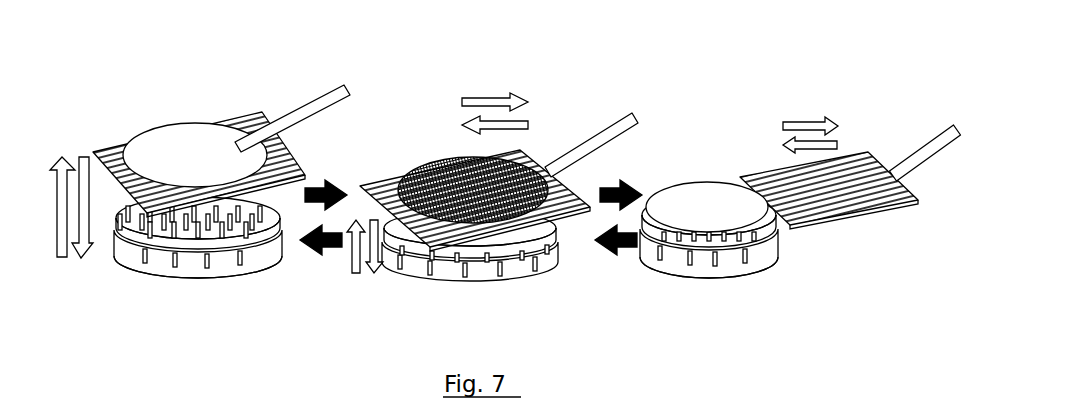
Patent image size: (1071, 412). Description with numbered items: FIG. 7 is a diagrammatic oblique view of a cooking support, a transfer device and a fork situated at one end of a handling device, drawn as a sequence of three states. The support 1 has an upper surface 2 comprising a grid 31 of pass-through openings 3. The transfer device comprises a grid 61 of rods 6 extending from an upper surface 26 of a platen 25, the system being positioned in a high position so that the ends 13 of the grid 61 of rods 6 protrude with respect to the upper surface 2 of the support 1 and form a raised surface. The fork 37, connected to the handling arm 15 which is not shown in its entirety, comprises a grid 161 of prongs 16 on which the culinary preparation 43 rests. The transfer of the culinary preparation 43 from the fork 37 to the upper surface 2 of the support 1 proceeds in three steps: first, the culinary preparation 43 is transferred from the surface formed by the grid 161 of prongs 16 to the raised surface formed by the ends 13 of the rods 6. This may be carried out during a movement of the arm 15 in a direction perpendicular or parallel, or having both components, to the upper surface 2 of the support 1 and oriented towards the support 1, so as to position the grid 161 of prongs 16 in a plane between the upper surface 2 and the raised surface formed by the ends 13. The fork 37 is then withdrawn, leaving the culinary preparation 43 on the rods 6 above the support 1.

The support 1 is at (252, 242).
The upper surface 2 is at (258, 212).
The pass-through openings 3 is at (208, 244).
The grid of pass-through openings 31 is at (240, 241).
The rods 6 is at (168, 265).
The grid of rods 61 is at (173, 308).
The ends of the rods 13 is at (168, 228).
The handling arm 15 is at (330, 42).
The prongs 16 is at (116, 146).
The grid of prongs 161 is at (90, 120).
The platen 25 is at (142, 275).
The upper surface of the platen 26 is at (140, 263).
The fork 37 is at (254, 127).
The culinary preparation 43 is at (179, 139).